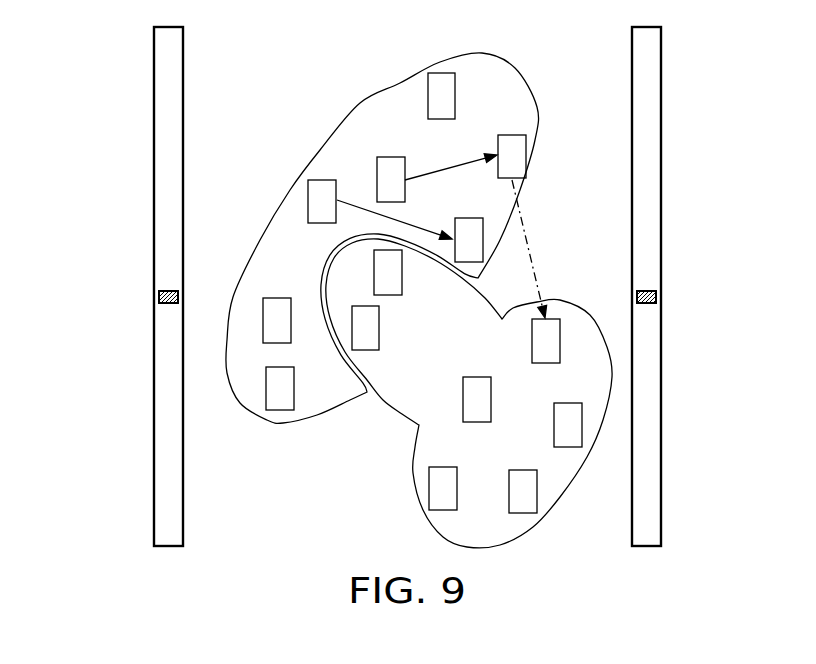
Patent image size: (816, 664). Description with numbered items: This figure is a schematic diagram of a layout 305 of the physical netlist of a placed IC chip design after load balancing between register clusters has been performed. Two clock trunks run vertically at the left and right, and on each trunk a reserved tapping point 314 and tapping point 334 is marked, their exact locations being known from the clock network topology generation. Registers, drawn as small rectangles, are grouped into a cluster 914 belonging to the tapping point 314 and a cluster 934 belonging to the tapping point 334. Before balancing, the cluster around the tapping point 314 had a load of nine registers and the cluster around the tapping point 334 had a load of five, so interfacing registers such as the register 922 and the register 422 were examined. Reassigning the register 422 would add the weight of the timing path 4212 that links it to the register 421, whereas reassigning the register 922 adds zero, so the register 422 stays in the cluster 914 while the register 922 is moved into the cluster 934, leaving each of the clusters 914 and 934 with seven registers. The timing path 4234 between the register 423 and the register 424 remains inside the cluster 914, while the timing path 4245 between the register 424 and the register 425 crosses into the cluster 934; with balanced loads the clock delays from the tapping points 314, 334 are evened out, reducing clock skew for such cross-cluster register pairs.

The layout 305 is at (87, 33).
The tapping point 314 is at (159, 297).
The tapping point 334 is at (656, 297).
The cluster 914 is at (247, 412).
The cluster 934 is at (413, 487).
The register 922 is at (372, 325).
The register 421 is at (314, 192).
The timing path 4212 is at (357, 207).
The register 422 is at (468, 233).
The register 423 is at (393, 168).
The timing path 4234 is at (427, 173).
The register 424 is at (517, 147).
The timing path 4245 is at (525, 233).
The register 425 is at (547, 352).